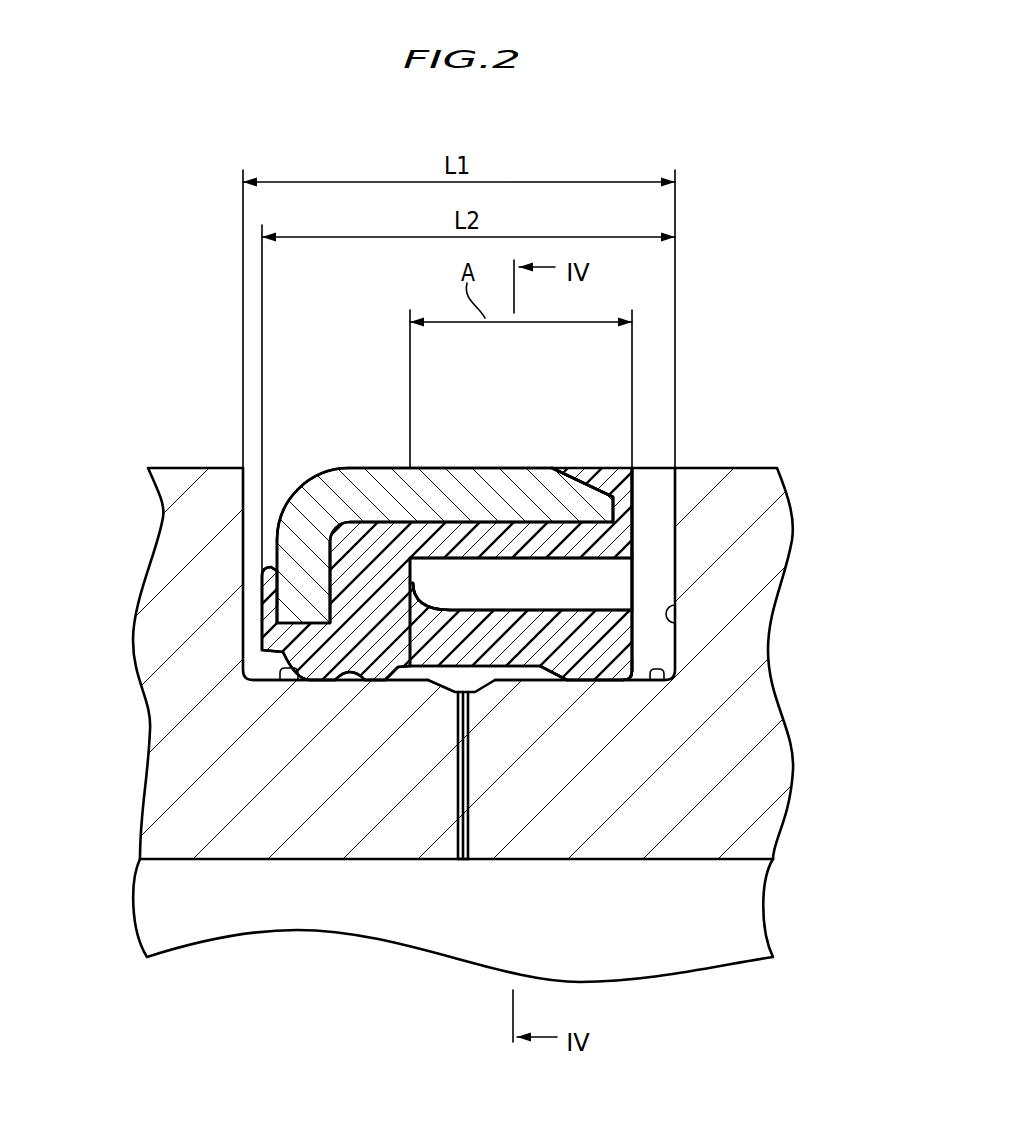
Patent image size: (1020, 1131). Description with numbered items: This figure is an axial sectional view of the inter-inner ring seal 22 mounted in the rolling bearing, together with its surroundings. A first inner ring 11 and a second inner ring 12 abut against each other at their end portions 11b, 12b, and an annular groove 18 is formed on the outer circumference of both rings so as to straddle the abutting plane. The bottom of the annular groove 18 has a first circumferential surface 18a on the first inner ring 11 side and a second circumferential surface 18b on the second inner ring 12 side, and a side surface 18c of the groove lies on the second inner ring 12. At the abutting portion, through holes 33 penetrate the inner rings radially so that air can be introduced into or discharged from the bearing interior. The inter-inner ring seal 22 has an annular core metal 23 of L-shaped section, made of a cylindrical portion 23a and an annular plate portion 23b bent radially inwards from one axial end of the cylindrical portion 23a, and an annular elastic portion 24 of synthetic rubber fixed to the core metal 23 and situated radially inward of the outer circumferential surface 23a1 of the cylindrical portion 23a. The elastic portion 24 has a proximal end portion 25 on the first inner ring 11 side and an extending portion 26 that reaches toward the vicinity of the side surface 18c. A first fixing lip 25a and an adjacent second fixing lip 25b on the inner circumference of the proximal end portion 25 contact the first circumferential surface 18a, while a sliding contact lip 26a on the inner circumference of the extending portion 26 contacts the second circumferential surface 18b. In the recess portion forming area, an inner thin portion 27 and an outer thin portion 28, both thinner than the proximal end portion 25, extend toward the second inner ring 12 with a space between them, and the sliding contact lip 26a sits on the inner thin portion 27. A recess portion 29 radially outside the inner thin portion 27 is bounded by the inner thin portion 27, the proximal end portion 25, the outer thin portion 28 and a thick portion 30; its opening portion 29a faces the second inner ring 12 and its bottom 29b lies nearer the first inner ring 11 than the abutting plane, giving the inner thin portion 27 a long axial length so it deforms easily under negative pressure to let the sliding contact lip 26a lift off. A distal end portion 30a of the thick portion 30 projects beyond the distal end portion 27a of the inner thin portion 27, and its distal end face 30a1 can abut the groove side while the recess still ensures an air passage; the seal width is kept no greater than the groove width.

The first inner ring 11 is at (143, 744).
The end portion of the first inner ring 11b is at (475, 770).
The second inner ring 12 is at (796, 748).
The end portion of the second inner ring 12b is at (443, 687).
The annular groove 18 is at (247, 493).
The first circumferential surface 18a is at (280, 680).
The second circumferential surface 18b is at (652, 680).
The side surface of the annular groove 18c is at (684, 613).
The inter-inner ring seal 22 is at (545, 398).
The core metal 23 is at (477, 464).
The cylindrical portion 23a is at (507, 480).
The outer circumferential surface of the cylindrical portion 23a1 is at (395, 466).
The annular plate portion 23b is at (288, 551).
The elastic portion 24 is at (440, 519).
The proximal end portion 25 is at (375, 568).
The first fixing lip 25a is at (325, 680).
The second fixing lip 25b is at (388, 680).
The extending portion 26 is at (641, 532).
The sliding contact lip 26a is at (567, 680).
The inner thin portion 27 is at (570, 679).
The distal end portion of the inner thin portion 27a is at (621, 680).
The outer thin portion 28 is at (577, 547).
The recess portion 29 is at (570, 593).
The opening portion 29a is at (641, 583).
The bottom of the recess portion 29b is at (450, 608).
The thick portion 30 is at (652, 490).
The distal end portion of the thick portion 30a is at (676, 652).
The distal end face 30a1 is at (677, 543).
The through hole 33 is at (458, 864).